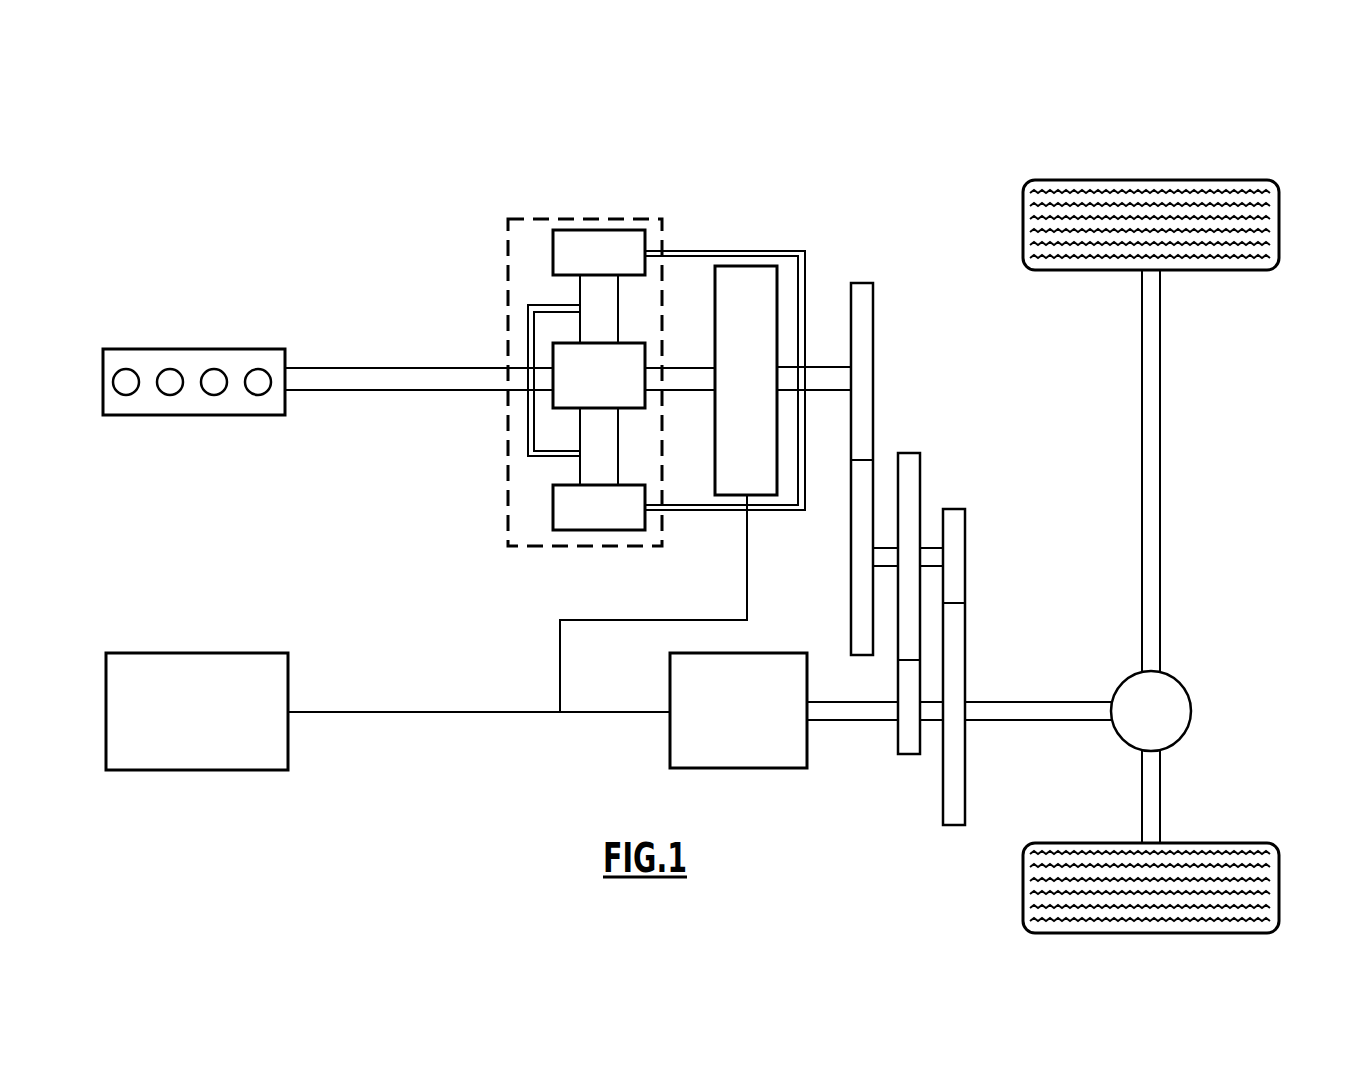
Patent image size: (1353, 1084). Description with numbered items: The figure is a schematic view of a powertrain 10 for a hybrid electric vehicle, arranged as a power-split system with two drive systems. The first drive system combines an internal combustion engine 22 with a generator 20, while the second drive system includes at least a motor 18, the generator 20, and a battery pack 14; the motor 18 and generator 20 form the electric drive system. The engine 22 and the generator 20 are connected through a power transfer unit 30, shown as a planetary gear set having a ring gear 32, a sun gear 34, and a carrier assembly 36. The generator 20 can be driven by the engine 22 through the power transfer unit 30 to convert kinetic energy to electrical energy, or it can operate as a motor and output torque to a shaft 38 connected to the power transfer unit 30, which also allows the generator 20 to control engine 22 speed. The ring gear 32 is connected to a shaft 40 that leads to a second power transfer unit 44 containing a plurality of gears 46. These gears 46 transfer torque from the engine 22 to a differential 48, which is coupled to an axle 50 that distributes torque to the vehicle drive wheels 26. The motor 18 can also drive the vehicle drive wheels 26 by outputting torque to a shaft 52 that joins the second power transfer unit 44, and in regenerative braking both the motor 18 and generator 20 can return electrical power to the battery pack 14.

The powertrain 10 is at (1053, 123).
The battery pack 14 is at (128, 652).
The motor 18 is at (807, 752).
The generator 20 is at (738, 266).
The internal combustion engine 22 is at (122, 349).
The vehicle drive wheels 26 is at (1280, 887).
The power transfer unit 30 is at (508, 510).
The ring gear 32 is at (553, 250).
The sun gear 34 is at (553, 350).
The carrier assembly 36 is at (528, 440).
The shaft 38 is at (674, 365).
The shaft 40 is at (832, 367).
The second power transfer unit 44 is at (946, 554).
The gears 46 is at (920, 475).
The differential 48 is at (1185, 735).
The axle 50 is at (1162, 458).
The shaft 52 is at (862, 722).